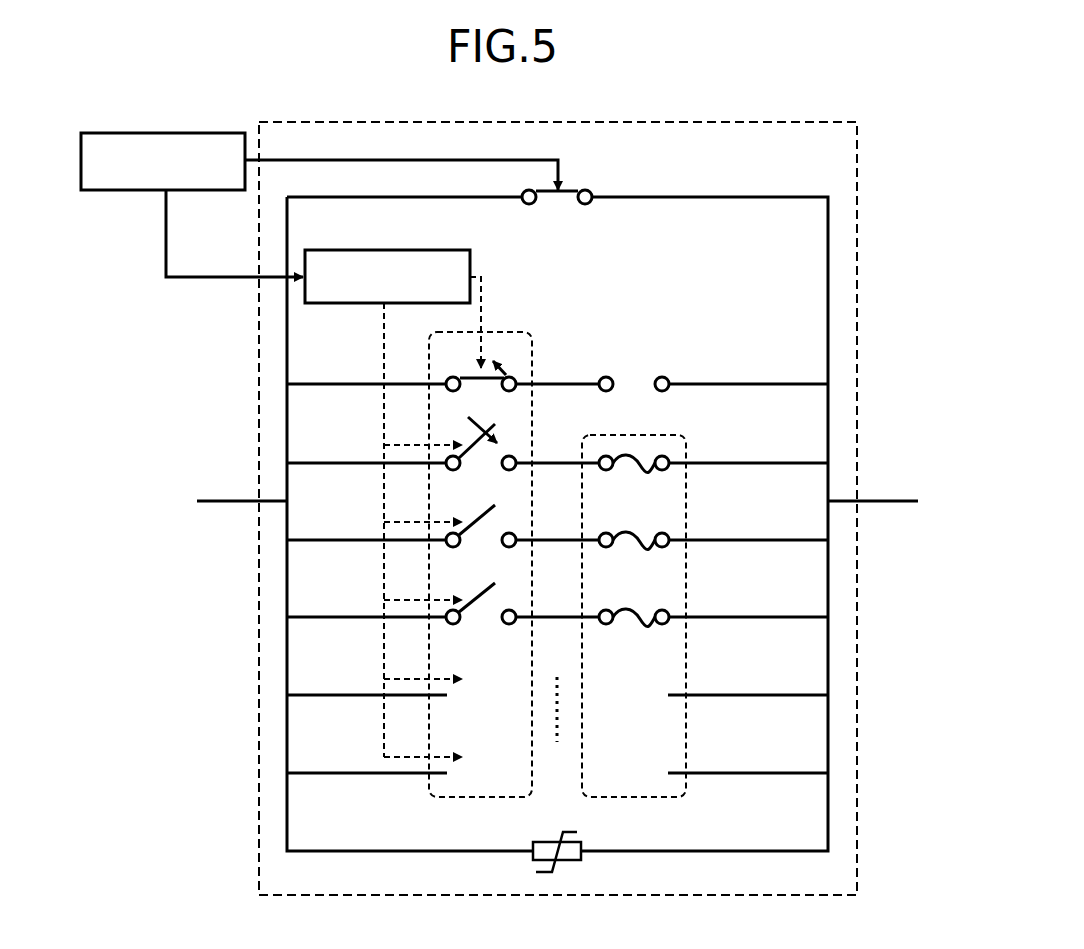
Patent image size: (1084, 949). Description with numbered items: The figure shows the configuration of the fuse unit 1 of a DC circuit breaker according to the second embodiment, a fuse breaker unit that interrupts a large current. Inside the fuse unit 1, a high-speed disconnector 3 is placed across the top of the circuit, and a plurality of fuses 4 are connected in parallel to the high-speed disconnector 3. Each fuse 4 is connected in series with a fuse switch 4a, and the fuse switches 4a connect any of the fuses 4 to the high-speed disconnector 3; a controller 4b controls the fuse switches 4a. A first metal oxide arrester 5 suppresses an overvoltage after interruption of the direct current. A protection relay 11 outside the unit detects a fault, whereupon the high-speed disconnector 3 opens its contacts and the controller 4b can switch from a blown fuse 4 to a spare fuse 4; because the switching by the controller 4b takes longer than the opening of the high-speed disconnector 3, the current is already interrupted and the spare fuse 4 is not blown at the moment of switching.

The fuse unit 1 is at (783, 122).
The high-speed disconnector 3 is at (579, 188).
The fuse 4 is at (636, 385).
The fuse switch 4a is at (472, 378).
The controller 4b is at (396, 250).
The first metal oxide arrester 5 is at (552, 842).
The protection relay 11 is at (187, 133).